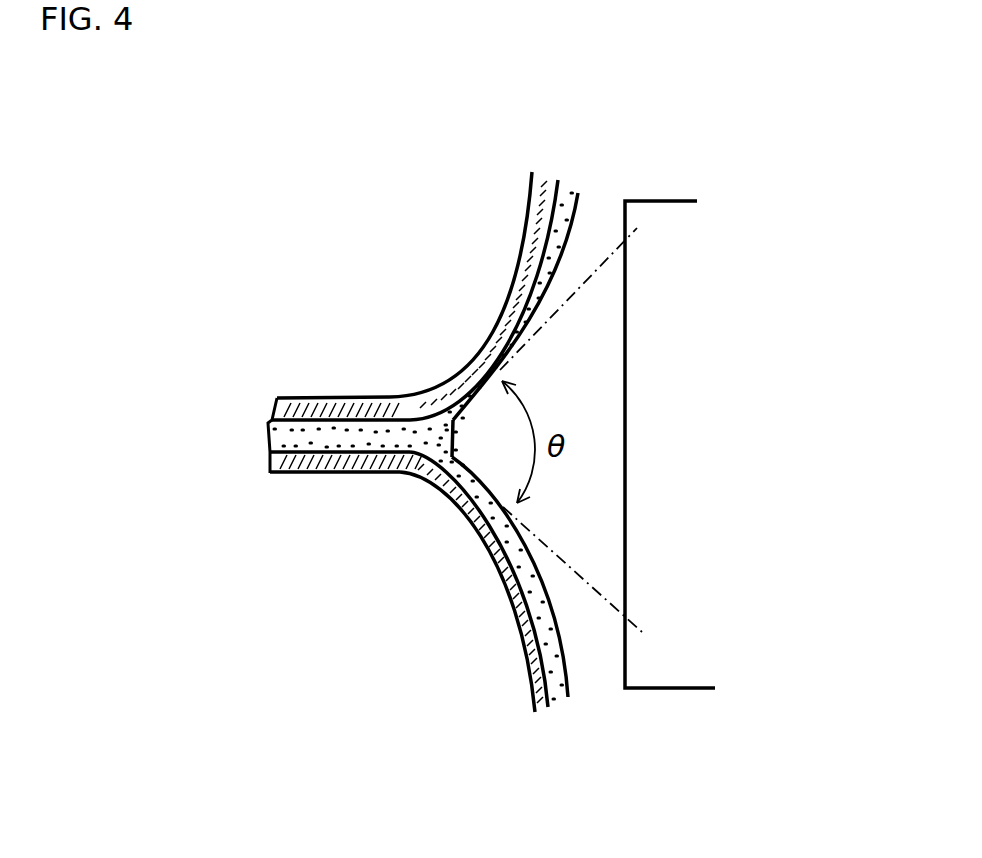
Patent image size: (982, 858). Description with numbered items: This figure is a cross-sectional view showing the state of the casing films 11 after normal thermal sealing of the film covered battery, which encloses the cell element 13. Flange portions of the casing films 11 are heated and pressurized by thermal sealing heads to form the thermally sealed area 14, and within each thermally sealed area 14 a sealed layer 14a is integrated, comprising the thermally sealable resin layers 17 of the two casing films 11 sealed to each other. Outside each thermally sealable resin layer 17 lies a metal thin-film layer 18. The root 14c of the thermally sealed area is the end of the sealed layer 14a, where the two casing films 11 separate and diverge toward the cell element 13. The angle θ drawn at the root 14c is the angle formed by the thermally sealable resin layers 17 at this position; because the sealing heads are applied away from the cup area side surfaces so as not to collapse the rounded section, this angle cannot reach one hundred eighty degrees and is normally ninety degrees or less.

The casing film 11 is at (430, 335).
The cell element 13 is at (652, 678).
The thermally sealed area 14 is at (443, 513).
The sealed layer 14a is at (347, 437).
The root of the thermally sealed area 14c is at (453, 443).
The thermally sealable resin layer 17 is at (575, 217).
The metal thin-film layer 18 is at (527, 228).